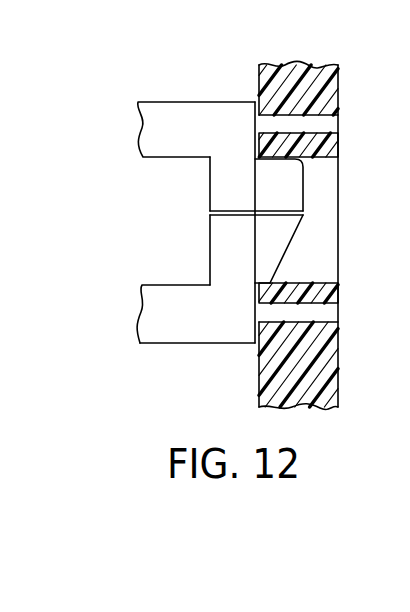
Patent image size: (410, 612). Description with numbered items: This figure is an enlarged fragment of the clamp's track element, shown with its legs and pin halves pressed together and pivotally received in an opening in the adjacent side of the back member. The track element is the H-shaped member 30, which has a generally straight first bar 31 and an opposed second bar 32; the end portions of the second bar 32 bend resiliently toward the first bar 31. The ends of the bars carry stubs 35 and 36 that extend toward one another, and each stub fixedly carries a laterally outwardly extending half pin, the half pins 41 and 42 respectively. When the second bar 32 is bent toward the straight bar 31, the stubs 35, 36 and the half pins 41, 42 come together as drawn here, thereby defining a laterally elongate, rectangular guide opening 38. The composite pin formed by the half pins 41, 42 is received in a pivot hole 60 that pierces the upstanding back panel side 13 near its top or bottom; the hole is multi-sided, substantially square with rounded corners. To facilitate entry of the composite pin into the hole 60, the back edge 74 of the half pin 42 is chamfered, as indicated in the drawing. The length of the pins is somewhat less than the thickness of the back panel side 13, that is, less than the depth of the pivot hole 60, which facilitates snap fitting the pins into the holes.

The back panel side 13 is at (331, 97).
The H-shaped member 30 is at (188, 227).
The first bar 31 is at (215, 107).
The second bar 32 is at (168, 340).
The stub 35 is at (222, 190).
The stub 36 is at (216, 238).
The guide opening 38 is at (160, 284).
The half pin 41 is at (293, 183).
The half pin 42 is at (332, 249).
The pivot hole 60 is at (313, 285).
The back edge 74 is at (288, 260).